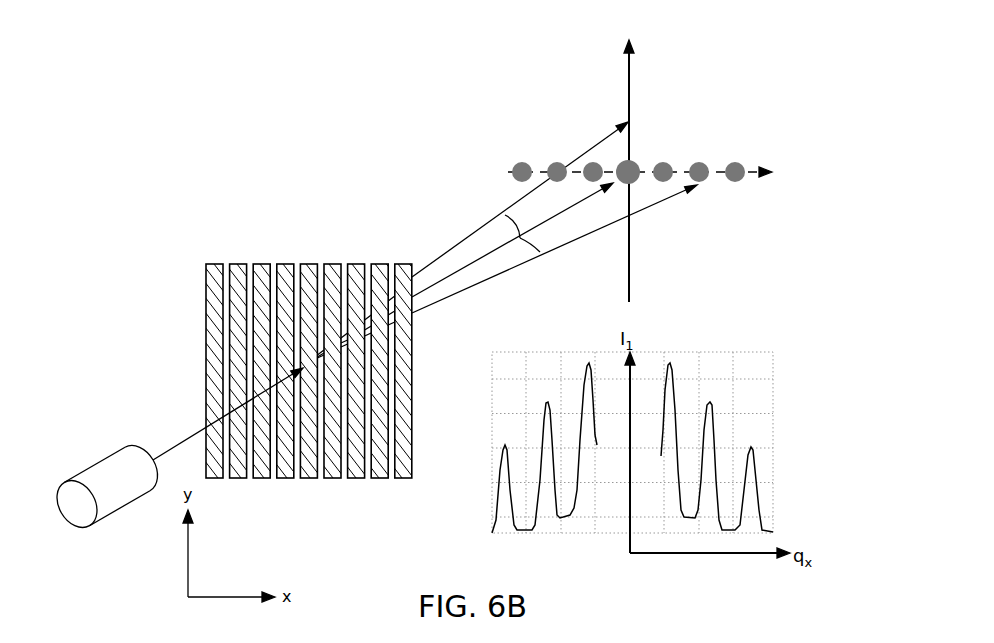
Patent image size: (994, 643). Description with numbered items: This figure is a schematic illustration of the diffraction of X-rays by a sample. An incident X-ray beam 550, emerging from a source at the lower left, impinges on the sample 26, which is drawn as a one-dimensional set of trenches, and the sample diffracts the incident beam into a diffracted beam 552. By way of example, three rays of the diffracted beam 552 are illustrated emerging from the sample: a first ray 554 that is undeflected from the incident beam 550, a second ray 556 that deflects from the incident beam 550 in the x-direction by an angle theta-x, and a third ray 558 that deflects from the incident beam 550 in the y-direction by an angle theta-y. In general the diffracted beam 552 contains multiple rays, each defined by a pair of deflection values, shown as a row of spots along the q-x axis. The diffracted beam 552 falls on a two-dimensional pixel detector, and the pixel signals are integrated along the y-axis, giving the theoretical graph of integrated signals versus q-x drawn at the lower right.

The sample 26 is at (205, 264).
The incident X-ray beam 550 is at (188, 430).
The diffracted beam 552 is at (445, 156).
The first ray 554 is at (493, 258).
The second ray 556 is at (658, 198).
The third ray 558 is at (590, 148).